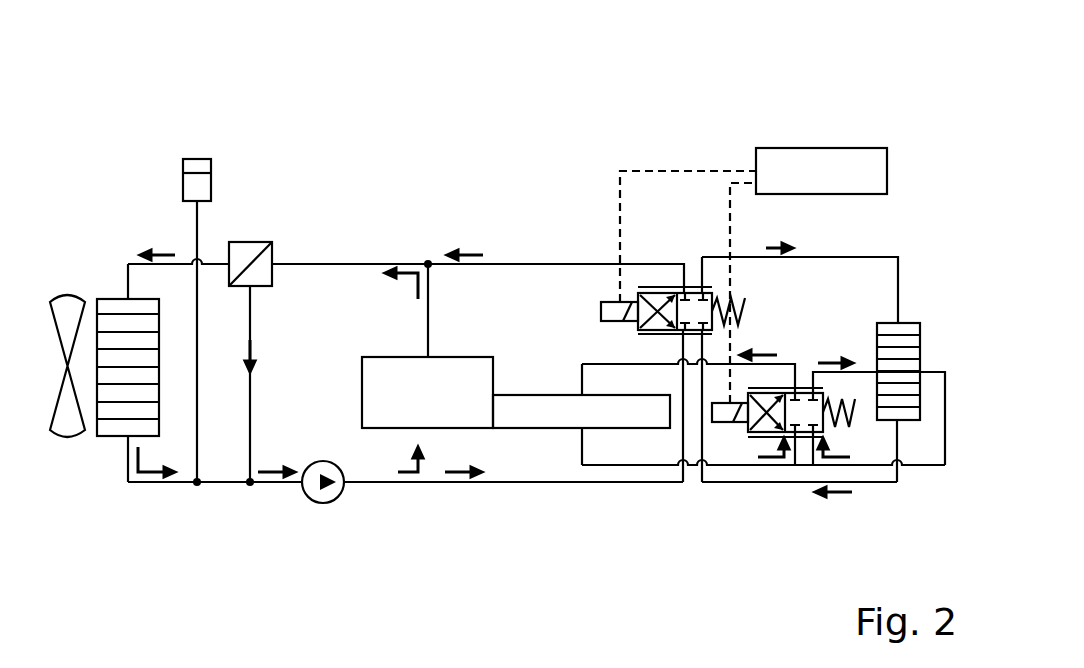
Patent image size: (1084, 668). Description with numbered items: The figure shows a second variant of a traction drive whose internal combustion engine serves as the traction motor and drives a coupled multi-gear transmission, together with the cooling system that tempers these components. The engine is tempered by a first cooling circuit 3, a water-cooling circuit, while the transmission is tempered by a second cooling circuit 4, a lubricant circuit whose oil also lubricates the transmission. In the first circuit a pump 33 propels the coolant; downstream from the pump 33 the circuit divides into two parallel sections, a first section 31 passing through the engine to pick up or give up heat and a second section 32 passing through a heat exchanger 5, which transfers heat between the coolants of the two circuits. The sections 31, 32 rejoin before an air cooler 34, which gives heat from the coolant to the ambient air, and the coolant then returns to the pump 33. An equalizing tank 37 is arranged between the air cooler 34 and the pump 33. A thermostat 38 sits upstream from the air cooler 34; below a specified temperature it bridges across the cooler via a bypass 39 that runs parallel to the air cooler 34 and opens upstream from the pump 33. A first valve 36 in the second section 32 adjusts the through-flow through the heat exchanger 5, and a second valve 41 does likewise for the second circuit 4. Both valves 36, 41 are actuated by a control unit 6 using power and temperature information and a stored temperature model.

The first cooling circuit 3 is at (561, 258).
The second cooling circuit 4 is at (792, 241).
The heat exchanger 5 is at (905, 343).
The control unit 6 is at (813, 148).
The first cooling circuit section 31 is at (374, 201).
The second cooling circuit section 32 is at (479, 490).
The pump 33 is at (307, 500).
The air cooler 34 is at (118, 408).
The first valve 36 is at (672, 282).
The equalizing tank 37 is at (211, 183).
The thermostat 38 is at (247, 240).
The bypass 39 is at (249, 436).
The second valve 41 is at (753, 440).